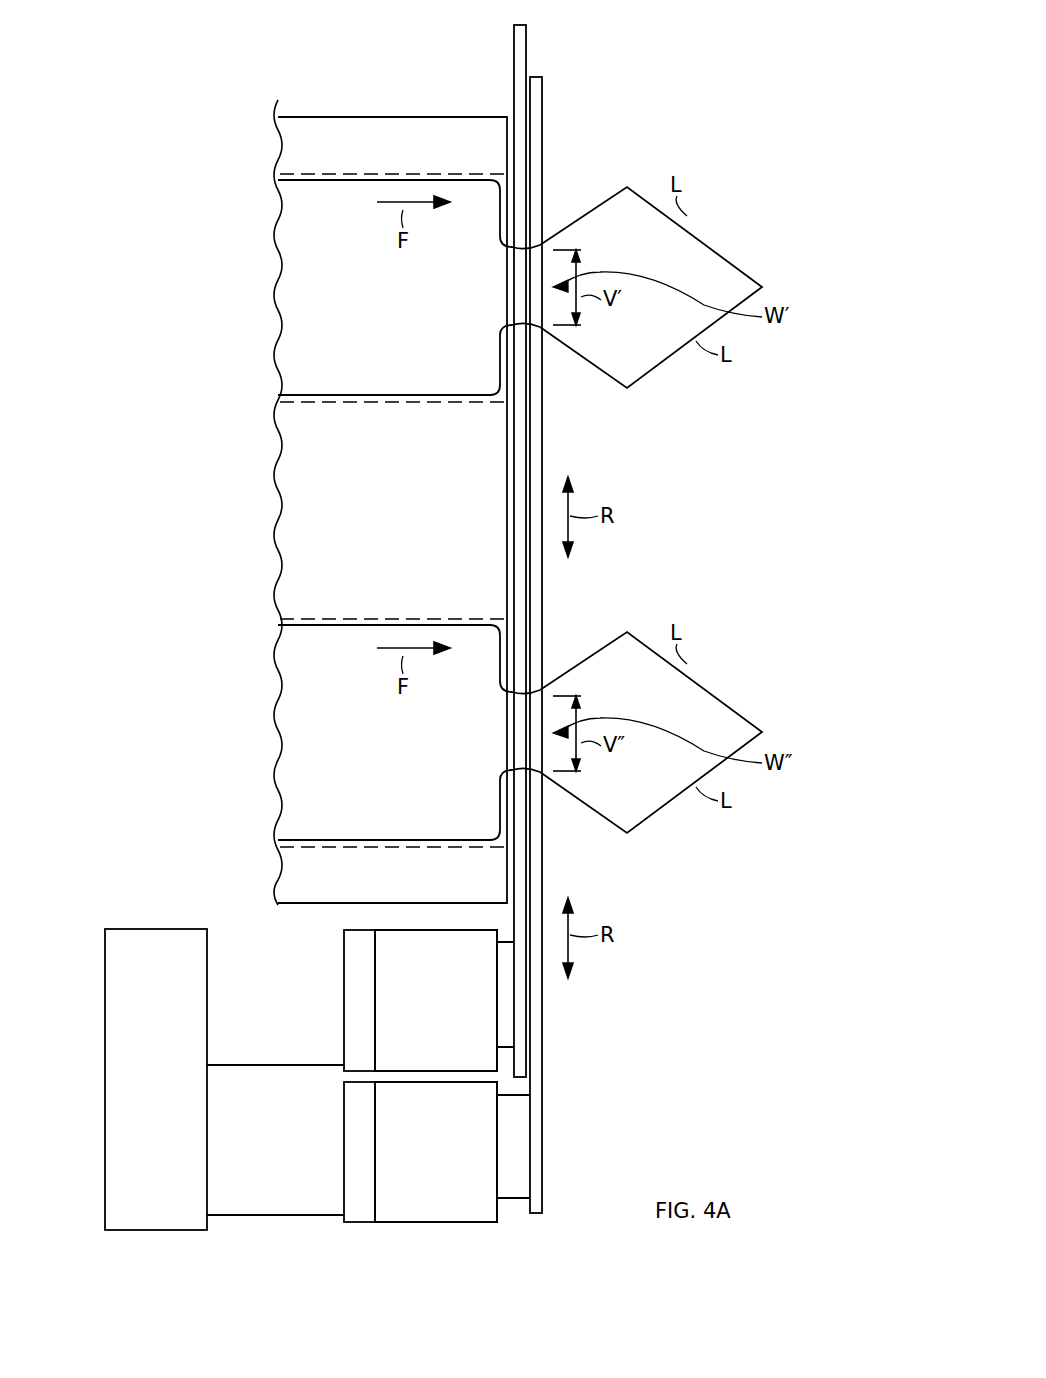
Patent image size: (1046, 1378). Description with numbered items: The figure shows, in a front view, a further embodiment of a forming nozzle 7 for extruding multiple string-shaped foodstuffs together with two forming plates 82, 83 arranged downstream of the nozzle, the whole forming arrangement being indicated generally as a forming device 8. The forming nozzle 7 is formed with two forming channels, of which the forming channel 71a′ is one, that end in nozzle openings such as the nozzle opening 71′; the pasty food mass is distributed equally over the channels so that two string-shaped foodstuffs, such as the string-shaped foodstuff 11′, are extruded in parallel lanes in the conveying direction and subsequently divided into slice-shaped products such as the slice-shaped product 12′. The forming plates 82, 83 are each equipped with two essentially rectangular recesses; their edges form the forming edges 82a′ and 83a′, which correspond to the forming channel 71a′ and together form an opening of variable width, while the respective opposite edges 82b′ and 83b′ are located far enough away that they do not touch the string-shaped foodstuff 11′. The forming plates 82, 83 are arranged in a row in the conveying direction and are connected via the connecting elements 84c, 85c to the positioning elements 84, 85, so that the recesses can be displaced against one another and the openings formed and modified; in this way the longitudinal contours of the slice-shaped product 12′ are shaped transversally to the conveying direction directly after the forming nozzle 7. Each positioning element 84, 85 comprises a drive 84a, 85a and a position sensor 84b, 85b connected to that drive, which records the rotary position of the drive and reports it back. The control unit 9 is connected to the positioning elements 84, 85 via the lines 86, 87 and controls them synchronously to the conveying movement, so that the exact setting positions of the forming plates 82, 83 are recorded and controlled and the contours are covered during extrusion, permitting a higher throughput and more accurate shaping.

The forming nozzle 7 is at (368, 94).
The folding device 8 is at (662, 76).
The control unit 9 is at (160, 1068).
The string-shaped foodstuff 11′ is at (405, 298).
The slice-shaped product 12′ is at (686, 236).
The nozzle opening 71′ is at (505, 297).
The forming channel 71a′ is at (304, 180).
The forming plate 82 is at (526, 35).
The forming edge 82a′ is at (524, 344).
The opposite edge 82b′ is at (524, 92).
The forming plate 83 is at (537, 182).
The forming edge 83a′ is at (538, 234).
The opposite edge 83b′ is at (542, 468).
The positioning element 84 is at (324, 960).
The drive 84a is at (455, 1010).
The position sensor 84b is at (350, 1020).
The connecting element 84c is at (508, 996).
The positioning element 85 is at (324, 1110).
The drive 85a is at (455, 1162).
The position sensor 85b is at (350, 1172).
The connecting element 85c is at (524, 1156).
The line 86 is at (255, 1066).
The line 87 is at (253, 1214).